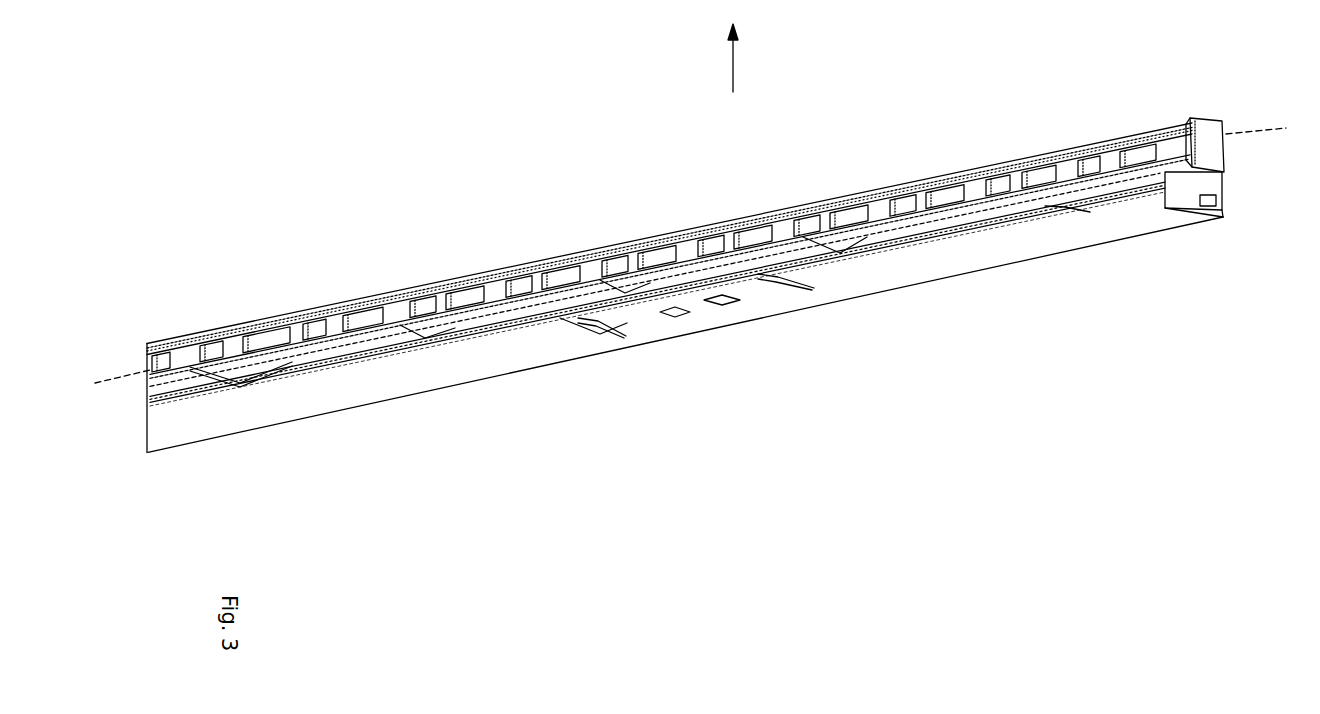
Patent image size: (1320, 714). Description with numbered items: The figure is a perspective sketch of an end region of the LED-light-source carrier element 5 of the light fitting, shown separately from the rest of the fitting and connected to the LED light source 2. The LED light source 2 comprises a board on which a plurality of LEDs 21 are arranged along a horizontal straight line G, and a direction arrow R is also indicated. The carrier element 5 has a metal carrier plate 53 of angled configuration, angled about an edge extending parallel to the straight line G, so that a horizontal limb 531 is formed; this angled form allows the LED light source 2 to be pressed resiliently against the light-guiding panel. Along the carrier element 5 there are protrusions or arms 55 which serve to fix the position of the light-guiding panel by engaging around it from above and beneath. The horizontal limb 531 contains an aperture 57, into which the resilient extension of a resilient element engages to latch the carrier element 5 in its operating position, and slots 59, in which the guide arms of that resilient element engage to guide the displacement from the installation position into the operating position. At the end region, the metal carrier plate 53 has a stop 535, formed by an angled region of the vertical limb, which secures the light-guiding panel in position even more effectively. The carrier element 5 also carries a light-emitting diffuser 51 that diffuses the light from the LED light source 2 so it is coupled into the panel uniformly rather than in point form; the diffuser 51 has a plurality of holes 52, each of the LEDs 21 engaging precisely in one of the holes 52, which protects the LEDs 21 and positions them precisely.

The LED-light-source carrier element 5 is at (645, 133).
The light-emitting diffuser 51 is at (1008, 155).
The holes 52 is at (966, 170).
The LEDs 21 is at (1085, 150).
The metal carrier plate 53 is at (685, 317).
The horizontal limb 531 is at (962, 273).
The stops 535 is at (1204, 125).
The LED light source 2 is at (1222, 186).
The protrusions or arms 55 is at (548, 260).
The aperture 57 is at (726, 306).
The slots 59 is at (601, 345).
The horizontal straight line G is at (1262, 131).
The direction arrow R is at (738, 58).